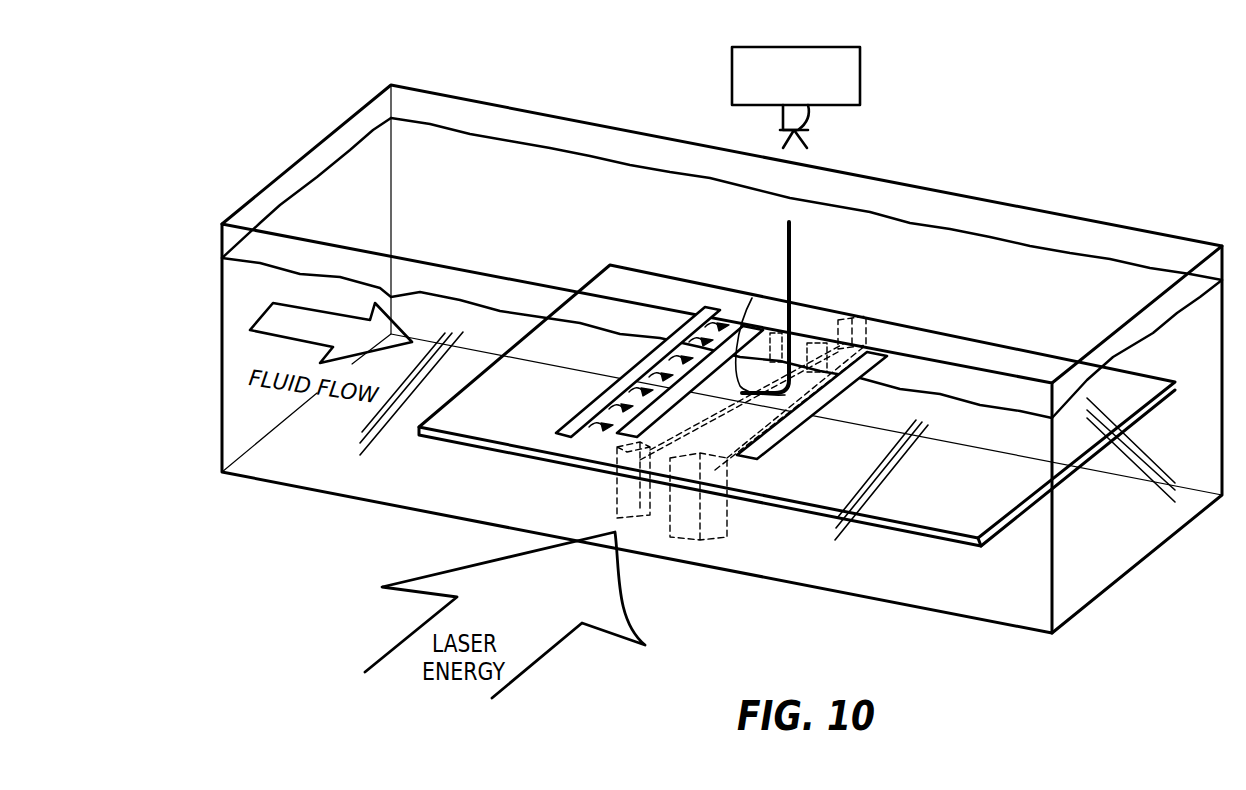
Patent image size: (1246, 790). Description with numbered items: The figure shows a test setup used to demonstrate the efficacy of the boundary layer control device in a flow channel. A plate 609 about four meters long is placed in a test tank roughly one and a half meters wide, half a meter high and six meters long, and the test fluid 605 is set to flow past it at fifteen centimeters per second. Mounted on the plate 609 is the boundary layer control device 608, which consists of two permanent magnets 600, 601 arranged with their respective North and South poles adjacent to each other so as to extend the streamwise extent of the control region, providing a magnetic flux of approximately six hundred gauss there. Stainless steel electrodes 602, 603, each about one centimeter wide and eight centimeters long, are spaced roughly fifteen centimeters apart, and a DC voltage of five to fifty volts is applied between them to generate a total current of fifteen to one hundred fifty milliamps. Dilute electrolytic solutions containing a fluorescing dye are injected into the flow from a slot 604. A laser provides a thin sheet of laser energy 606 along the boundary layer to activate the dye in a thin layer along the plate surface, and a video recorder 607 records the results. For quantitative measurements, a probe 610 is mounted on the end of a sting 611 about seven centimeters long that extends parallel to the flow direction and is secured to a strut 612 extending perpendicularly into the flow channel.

The permanent magnet 600 is at (617, 492).
The permanent magnet 601 is at (695, 537).
The electrode 602 is at (893, 355).
The electrode 603 is at (613, 437).
The slot 604 is at (583, 407).
The test fluid 605 is at (227, 288).
The laser energy 606 is at (555, 633).
The video recorder 607 is at (853, 80).
The boundary layer control device 608 is at (545, 456).
The plate 609 is at (927, 333).
The probe 610 is at (758, 290).
The sting 611 is at (778, 300).
The strut 612 is at (793, 240).